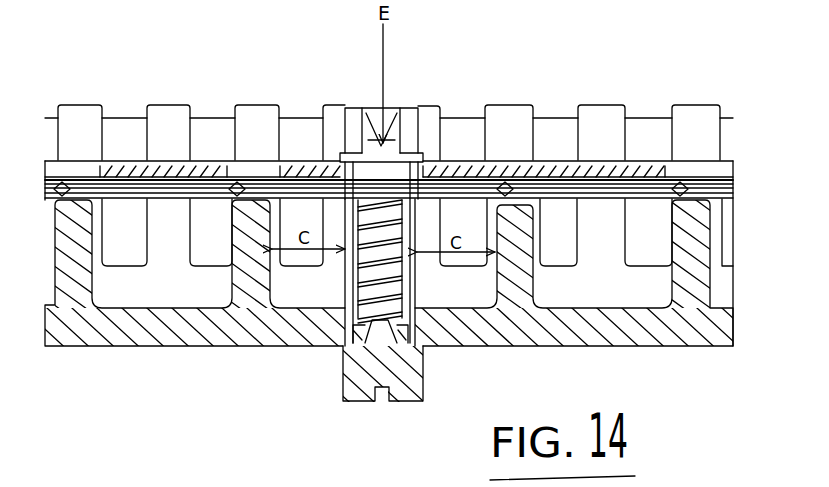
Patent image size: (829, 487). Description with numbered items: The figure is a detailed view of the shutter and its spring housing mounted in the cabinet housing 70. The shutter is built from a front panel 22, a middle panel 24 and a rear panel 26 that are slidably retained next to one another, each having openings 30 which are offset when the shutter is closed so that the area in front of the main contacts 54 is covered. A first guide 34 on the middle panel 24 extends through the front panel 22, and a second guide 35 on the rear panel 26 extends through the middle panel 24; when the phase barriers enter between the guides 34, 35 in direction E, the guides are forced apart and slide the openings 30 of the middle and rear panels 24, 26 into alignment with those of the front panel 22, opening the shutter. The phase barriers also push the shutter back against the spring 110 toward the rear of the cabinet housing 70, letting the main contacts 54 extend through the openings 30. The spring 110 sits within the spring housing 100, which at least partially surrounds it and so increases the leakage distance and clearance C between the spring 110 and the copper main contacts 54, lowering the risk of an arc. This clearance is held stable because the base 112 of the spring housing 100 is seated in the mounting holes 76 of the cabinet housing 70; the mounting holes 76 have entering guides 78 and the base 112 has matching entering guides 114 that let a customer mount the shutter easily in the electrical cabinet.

The front panel 22 is at (645, 170).
The middle panel 24 is at (667, 181).
The rear panel 26 is at (667, 193).
The openings 30 is at (243, 172).
The first guide 34 is at (372, 140).
The second guide 35 is at (362, 150).
The main contacts 54 is at (515, 237).
The cabinet housing 70 is at (722, 88).
The mounting holes 76 is at (350, 332).
The entering guides 78 is at (357, 338).
The spring housing 100 is at (418, 223).
The spring 110 is at (400, 201).
The base 112 is at (417, 323).
The entering guides 114 is at (410, 342).